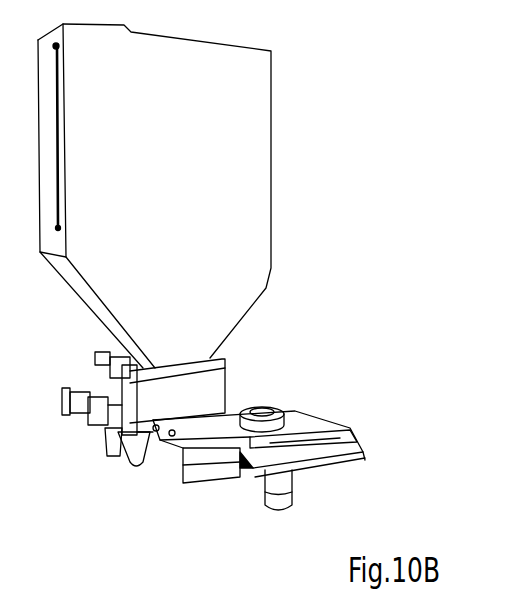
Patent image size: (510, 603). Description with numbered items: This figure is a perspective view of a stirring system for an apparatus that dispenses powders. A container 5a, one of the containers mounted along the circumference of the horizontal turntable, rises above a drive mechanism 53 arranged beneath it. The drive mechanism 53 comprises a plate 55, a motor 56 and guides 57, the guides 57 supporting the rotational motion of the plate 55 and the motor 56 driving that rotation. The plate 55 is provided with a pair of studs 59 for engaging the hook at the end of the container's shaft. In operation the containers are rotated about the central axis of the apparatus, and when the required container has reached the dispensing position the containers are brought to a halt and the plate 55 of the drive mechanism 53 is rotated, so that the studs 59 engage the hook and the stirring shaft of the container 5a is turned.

The container 5a is at (247, 109).
The drive mechanism 53 is at (314, 402).
The plate 55 is at (290, 414).
The motor 56 is at (272, 500).
The guides 57 is at (323, 422).
The studs 59 is at (174, 437).